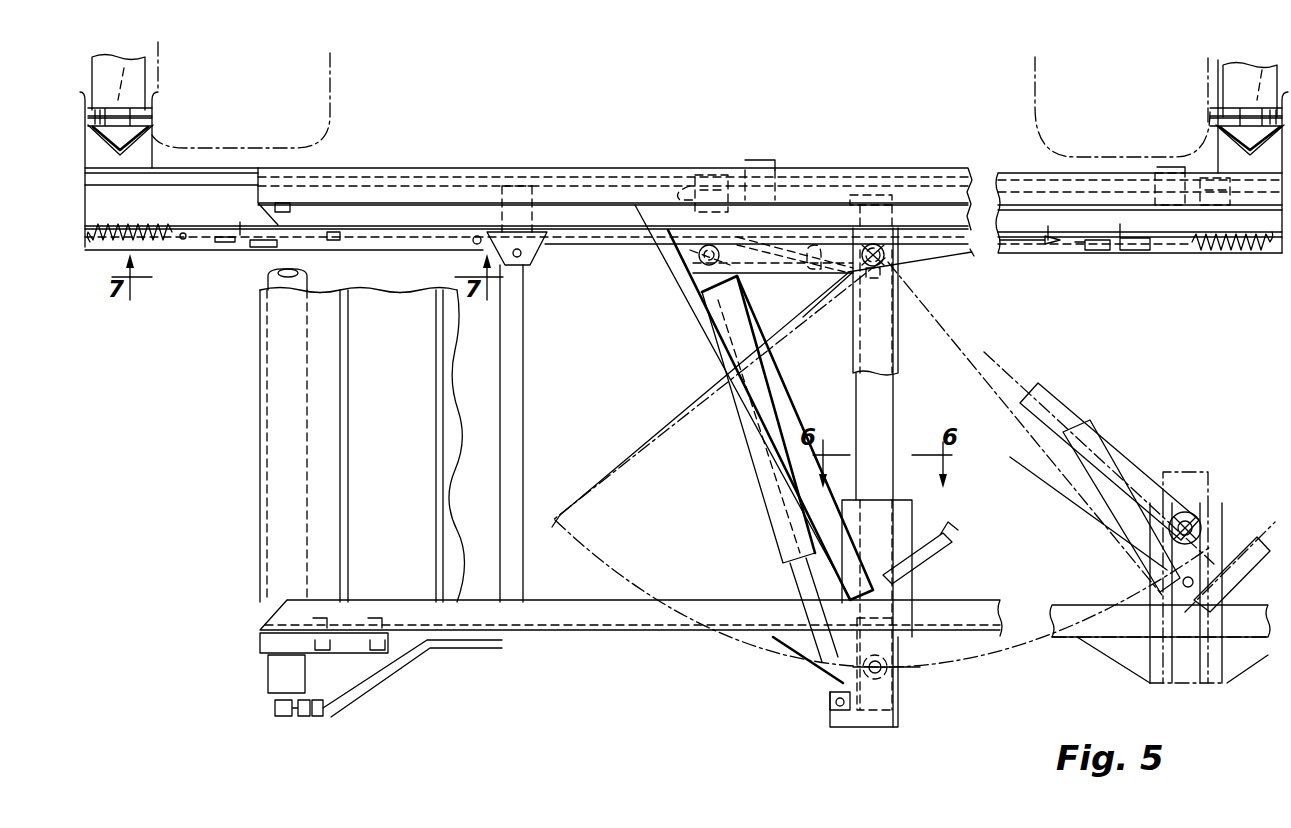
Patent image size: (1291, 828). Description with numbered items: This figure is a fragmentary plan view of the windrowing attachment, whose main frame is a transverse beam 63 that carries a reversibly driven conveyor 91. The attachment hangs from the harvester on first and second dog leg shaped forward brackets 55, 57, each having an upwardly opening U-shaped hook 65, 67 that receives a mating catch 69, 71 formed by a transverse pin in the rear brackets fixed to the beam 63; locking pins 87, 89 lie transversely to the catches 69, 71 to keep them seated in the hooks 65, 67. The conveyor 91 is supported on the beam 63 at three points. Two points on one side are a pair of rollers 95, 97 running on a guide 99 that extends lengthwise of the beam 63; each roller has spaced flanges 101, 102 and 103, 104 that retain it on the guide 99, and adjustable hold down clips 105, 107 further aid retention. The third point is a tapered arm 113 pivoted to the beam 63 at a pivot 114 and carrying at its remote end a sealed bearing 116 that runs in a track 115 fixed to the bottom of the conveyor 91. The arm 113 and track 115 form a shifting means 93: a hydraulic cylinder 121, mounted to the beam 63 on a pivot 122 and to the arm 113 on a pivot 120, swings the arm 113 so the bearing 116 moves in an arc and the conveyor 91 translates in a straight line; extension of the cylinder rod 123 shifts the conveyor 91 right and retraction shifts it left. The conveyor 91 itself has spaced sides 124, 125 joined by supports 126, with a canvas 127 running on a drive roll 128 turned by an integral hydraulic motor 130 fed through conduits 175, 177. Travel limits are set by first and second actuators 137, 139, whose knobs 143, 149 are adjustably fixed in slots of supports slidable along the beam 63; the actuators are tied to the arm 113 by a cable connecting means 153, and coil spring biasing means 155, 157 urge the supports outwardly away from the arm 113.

The first dog leg shaped forward bracket 55 is at (162, 80).
The second dog leg shaped forward bracket 57 is at (1207, 83).
The transverse beam 63 is at (236, 168).
The U-shaped hook 65 is at (152, 122).
The U-shaped hook 67 is at (1216, 125).
The catch 69 is at (150, 110).
The catch 71 is at (1212, 106).
The locking pin 87 is at (118, 83).
The locking pin 89 is at (1250, 90).
The reversibly driven conveyor 91 is at (326, 432).
The shifting means 93 is at (881, 462).
The roller 95 is at (713, 160).
The roller 97 is at (1185, 146).
The guide 99 is at (218, 185).
The flange 101 is at (700, 174).
The flange 102 is at (690, 186).
The flange 103 is at (1180, 208).
The flange 104 is at (1203, 205).
The adjustable hold down clip 105 is at (1082, 172).
The adjustable hold down clip 107 is at (768, 162).
The tapered arm 113 is at (1060, 400).
The pivot 114 is at (904, 275).
The track 115 is at (908, 516).
The sealed bearing 116 is at (890, 674).
The pivot 120 is at (830, 706).
The hydraulic cylinder 121 is at (768, 482).
The pivot 122 is at (696, 260).
The cylinder rod 123 is at (793, 596).
The conveyor side 124 is at (586, 632).
The conveyor side 125 is at (408, 168).
The support 126 is at (523, 417).
The canvas 127 is at (400, 452).
The drive roll 128 is at (275, 281).
The hydraulic motor 130 is at (268, 680).
The first actuator 137 is at (185, 262).
The second actuator 139 is at (1090, 266).
The knob 143 is at (225, 243).
The knob 149 is at (1120, 252).
The connecting means 153 is at (546, 242).
The biasing means 155 is at (100, 250).
The biasing means 157 is at (1246, 252).
The conduit 175 is at (415, 678).
The conduit 177 is at (420, 652).